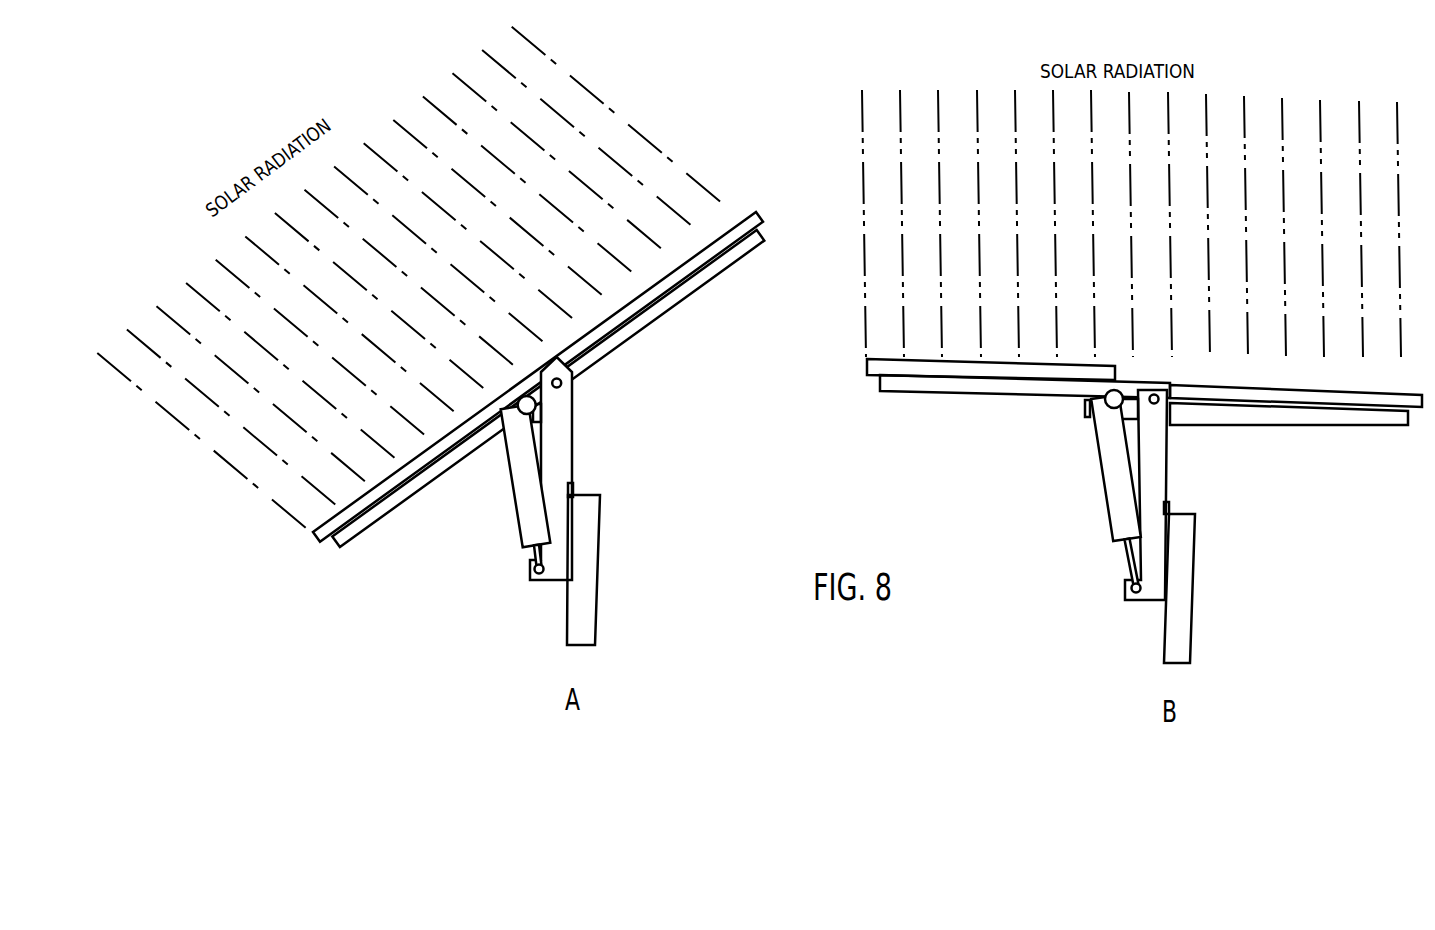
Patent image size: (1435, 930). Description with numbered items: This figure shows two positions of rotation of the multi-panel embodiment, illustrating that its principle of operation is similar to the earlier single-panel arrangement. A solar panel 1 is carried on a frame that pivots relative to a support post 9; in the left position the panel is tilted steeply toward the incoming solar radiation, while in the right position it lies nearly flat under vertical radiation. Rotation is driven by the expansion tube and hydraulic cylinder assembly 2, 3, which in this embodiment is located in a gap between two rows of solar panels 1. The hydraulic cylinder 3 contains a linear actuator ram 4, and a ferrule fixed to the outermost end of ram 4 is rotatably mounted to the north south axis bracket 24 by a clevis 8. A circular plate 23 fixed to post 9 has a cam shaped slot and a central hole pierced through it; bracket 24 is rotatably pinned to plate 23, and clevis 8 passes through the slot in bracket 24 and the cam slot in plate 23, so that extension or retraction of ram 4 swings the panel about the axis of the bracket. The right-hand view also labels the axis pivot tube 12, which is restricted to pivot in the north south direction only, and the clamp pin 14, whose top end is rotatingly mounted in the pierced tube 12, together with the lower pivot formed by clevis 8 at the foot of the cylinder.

The solar panel 1 is at (175, 626).
The expansion tube 2 is at (611, 436).
The hydraulic cylinder 3 is at (472, 500).
The linear actuator ram 4 is at (529, 563).
The north south axis bracket 24 is at (637, 468).
The clamp pin 14 is at (1144, 417).
The axis pivot tube 12 is at (1211, 439).
The circular plate 23 is at (1198, 495).
The support post 9 is at (1248, 582).
The clevis 8 is at (1091, 607).